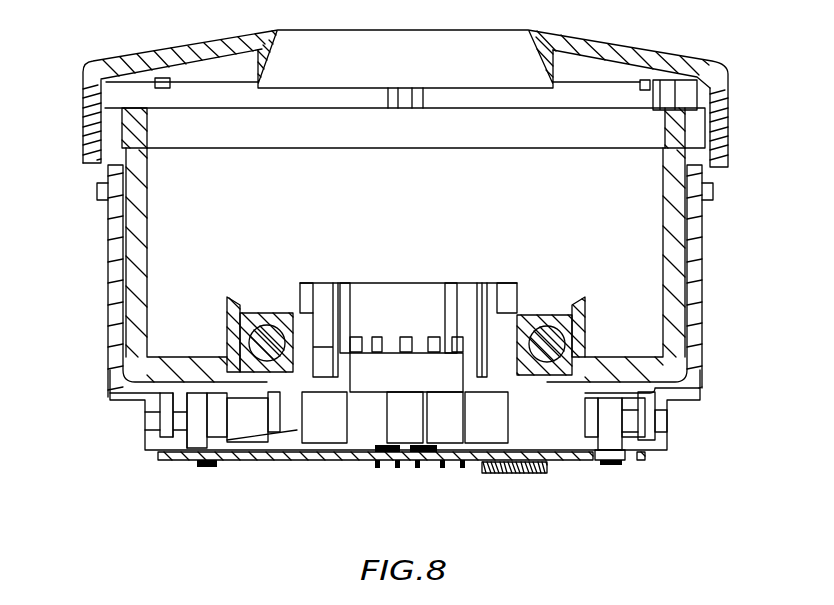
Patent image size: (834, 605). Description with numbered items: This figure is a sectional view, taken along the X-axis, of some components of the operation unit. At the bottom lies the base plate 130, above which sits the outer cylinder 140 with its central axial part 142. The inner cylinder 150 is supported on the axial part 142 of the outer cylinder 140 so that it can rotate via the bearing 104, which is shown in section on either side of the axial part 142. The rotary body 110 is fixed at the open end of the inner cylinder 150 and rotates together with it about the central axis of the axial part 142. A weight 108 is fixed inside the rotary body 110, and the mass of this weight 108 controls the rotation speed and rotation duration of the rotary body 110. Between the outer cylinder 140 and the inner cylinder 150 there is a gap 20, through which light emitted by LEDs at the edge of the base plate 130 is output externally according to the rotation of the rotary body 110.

The gap 20 is at (84, 176).
The rotary body 110 is at (723, 98).
The weight 108 is at (682, 128).
The inner cylinder 150 is at (673, 173).
The axial part 142 is at (513, 293).
The bearing 104 is at (543, 343).
The outer cylinder 140 is at (693, 395).
The base plate 130 is at (650, 455).